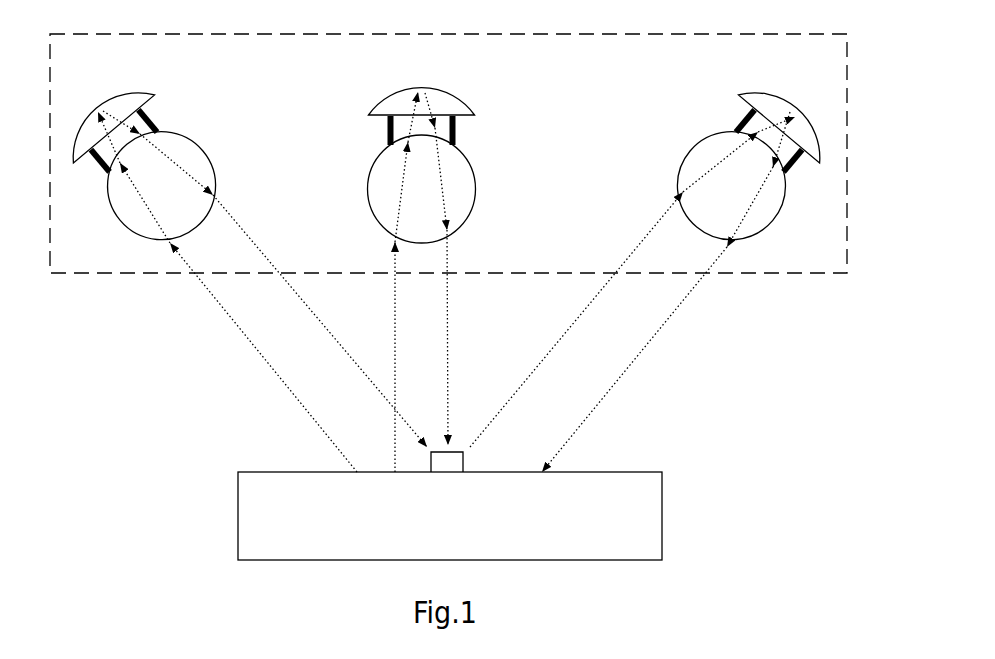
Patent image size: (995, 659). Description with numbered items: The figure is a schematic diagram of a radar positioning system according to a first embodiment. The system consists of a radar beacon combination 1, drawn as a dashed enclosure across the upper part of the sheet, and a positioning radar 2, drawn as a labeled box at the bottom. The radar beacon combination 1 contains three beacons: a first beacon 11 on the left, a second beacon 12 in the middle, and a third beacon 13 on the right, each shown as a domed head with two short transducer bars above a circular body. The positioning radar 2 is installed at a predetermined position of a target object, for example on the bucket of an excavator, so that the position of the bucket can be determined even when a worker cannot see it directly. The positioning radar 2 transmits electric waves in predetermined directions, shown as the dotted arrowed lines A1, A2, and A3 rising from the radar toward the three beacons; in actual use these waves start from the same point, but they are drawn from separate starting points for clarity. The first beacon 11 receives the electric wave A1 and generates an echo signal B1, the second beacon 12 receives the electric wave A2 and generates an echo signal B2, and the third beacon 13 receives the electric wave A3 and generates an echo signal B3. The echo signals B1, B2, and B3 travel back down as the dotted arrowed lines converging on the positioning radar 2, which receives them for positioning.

The radar beacon combination 1 is at (720, 35).
The first beacon 11 is at (147, 92).
The second beacon 12 is at (460, 93).
The third beacon 13 is at (750, 95).
The positioning radar 2 is at (600, 472).
The electric wave A1 is at (227, 292).
The echo signal B1 is at (265, 279).
The electric wave A2 is at (383, 282).
The echo signal B2 is at (460, 269).
The electric wave A3 is at (632, 282).
The echo signal B3 is at (666, 292).